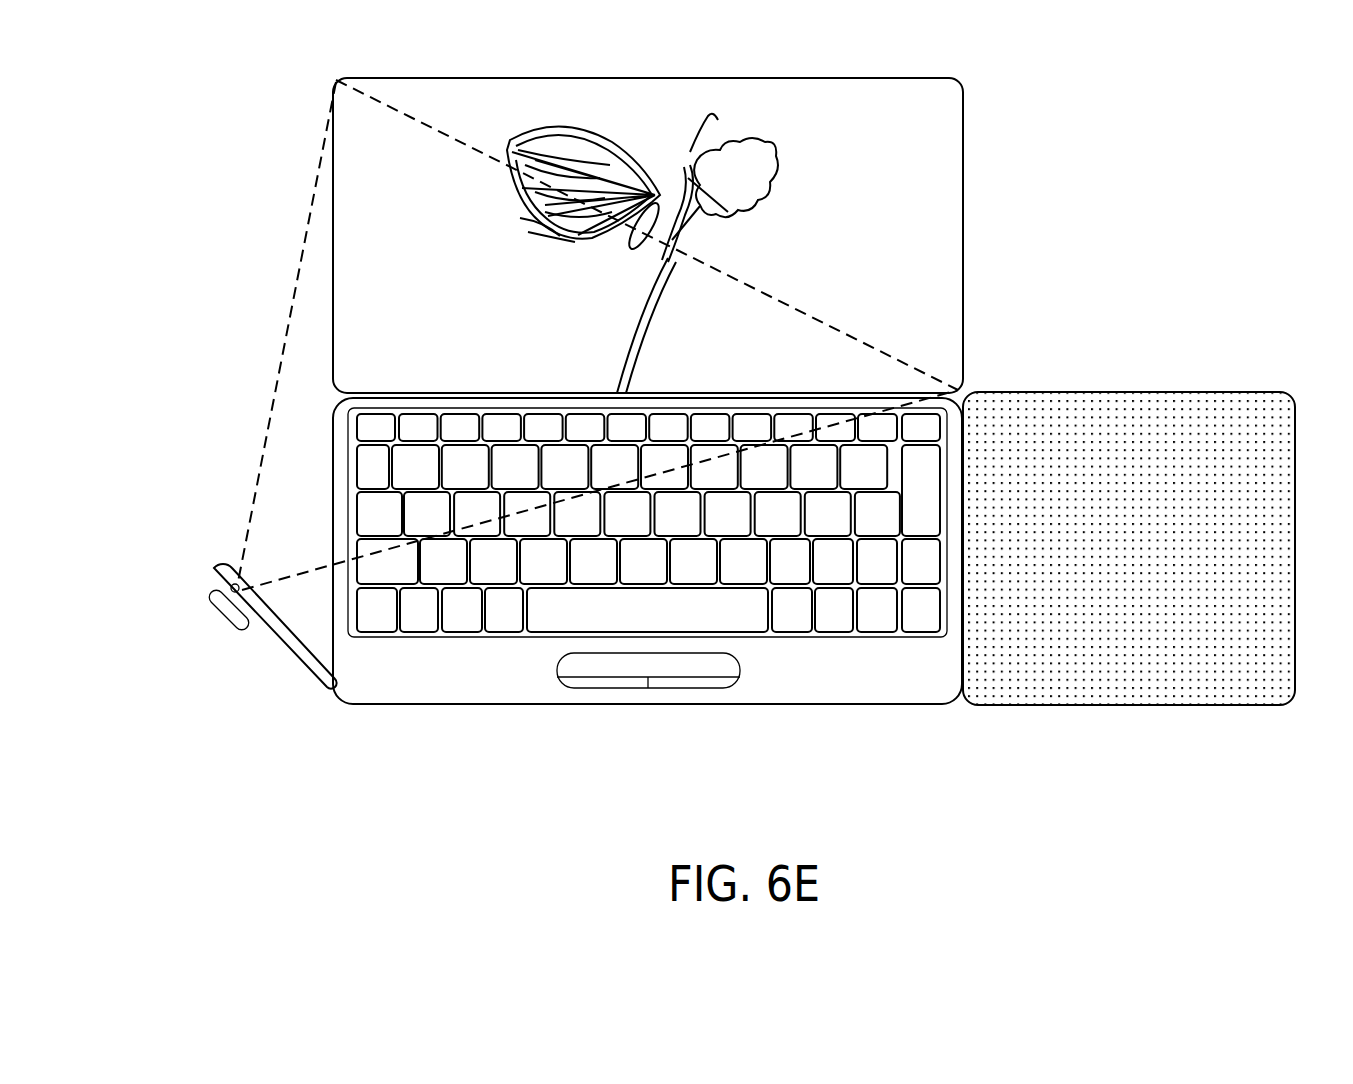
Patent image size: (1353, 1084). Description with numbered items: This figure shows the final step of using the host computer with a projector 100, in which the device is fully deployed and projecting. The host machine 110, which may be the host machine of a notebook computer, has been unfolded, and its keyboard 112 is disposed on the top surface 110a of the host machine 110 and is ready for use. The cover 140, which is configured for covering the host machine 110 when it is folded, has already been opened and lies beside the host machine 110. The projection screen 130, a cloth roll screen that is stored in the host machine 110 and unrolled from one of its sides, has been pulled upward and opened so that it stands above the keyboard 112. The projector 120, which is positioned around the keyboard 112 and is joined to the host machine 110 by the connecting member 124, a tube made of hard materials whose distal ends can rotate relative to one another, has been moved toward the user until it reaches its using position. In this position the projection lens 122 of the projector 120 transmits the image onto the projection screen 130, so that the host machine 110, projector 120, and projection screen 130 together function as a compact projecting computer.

The host computer with a projector 100 is at (1309, 789).
The host machine 110 is at (647, 586).
The top surface 110a is at (447, 656).
The keyboard 112 is at (512, 634).
The projector 120 is at (212, 637).
The projection lens 122 is at (246, 614).
The connecting member 124 is at (302, 660).
The projection screen 130 is at (898, 236).
The cover 140 is at (1073, 410).